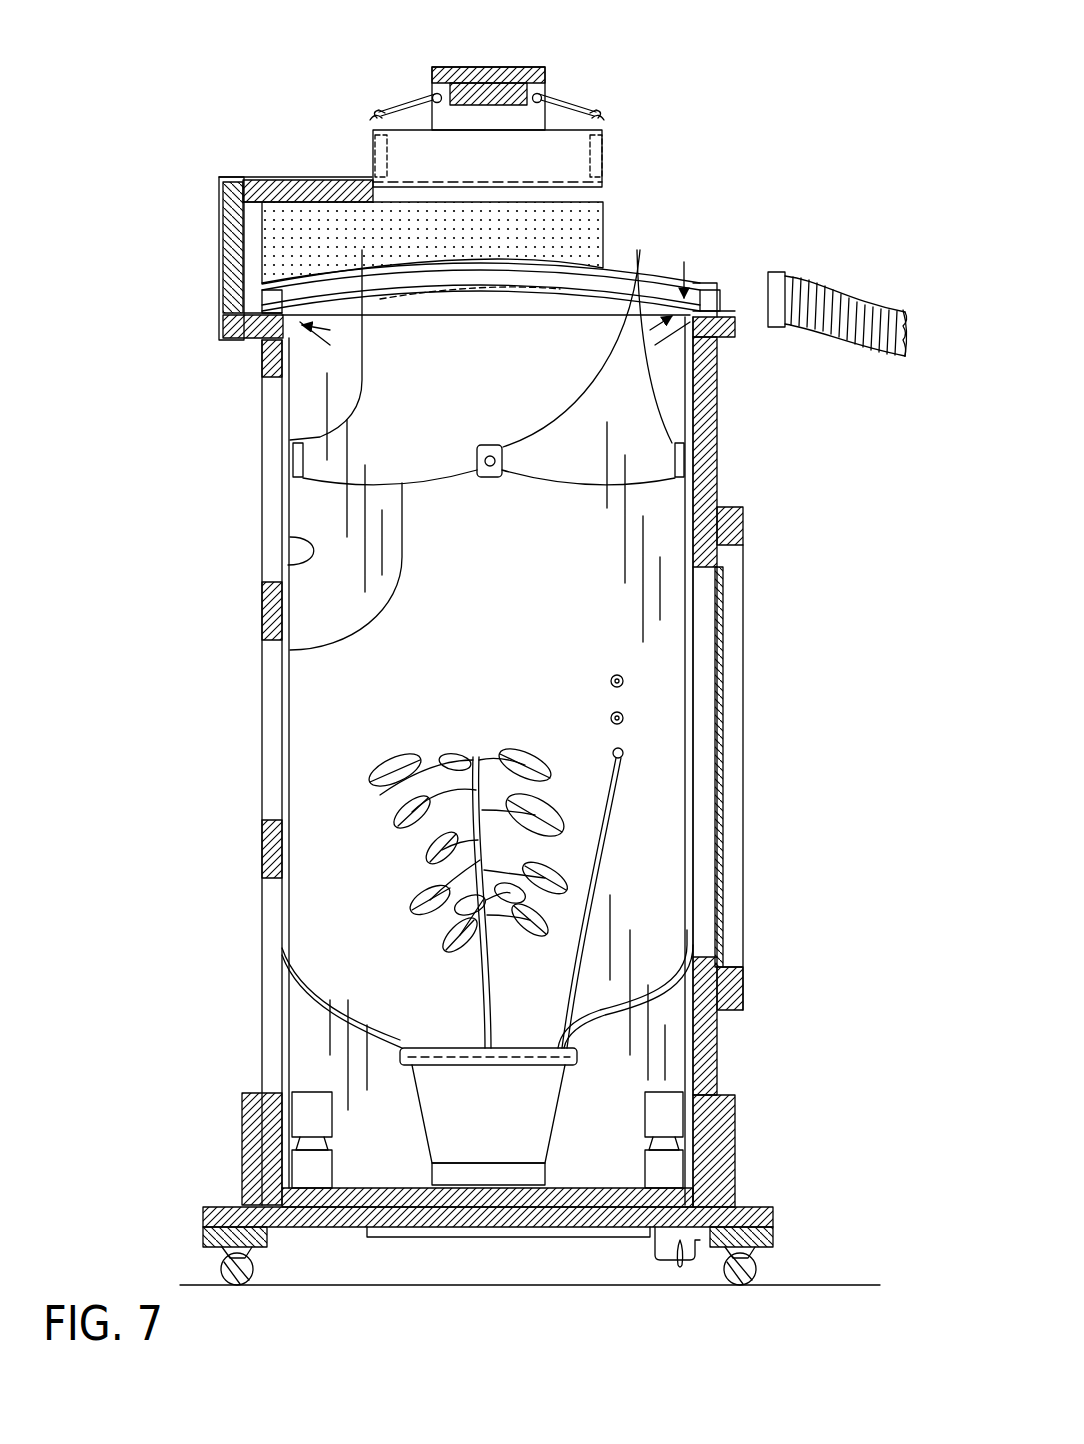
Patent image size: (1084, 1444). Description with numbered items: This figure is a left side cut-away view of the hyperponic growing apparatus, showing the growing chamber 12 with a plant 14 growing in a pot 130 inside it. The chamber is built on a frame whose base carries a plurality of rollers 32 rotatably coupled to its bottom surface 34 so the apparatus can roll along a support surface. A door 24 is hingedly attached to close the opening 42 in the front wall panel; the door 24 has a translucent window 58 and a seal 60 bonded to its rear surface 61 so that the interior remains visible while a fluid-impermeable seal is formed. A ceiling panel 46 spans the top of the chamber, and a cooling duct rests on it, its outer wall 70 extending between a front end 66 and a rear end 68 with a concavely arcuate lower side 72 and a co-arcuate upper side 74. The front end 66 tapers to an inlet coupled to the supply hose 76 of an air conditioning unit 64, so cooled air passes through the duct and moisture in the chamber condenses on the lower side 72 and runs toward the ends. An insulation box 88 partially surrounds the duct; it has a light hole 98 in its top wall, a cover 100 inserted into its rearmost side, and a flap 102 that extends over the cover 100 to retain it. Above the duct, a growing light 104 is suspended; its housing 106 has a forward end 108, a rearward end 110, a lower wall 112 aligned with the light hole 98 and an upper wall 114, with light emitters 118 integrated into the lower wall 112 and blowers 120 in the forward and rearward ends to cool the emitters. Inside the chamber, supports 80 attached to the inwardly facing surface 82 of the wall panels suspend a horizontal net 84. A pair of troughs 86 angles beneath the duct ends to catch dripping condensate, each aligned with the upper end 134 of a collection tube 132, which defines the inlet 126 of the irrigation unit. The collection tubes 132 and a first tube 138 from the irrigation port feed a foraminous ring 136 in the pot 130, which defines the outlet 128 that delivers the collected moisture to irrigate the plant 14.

The growing chamber 12 is at (150, 480).
The plant 14 is at (378, 795).
The door 24 is at (743, 525).
The rollers 32 is at (222, 1265).
The bottom surface 34 is at (307, 1228).
The opening 42 is at (720, 590).
The ceiling panel 46 is at (725, 318).
The window 58 is at (743, 760).
The seal 60 is at (723, 690).
The rear surface 61 is at (713, 470).
The air conditioning unit 64 is at (850, 295).
The front end 66 is at (700, 315).
The rear end 68 is at (244, 300).
The outer wall 70 is at (283, 193).
The lower side 72 is at (365, 434).
The upper side 74 is at (345, 250).
The supply hose 76 is at (880, 350).
The supports 80 is at (295, 490).
The inwardly facing surface 82 is at (290, 537).
The net 84 is at (282, 650).
The troughs 86 is at (292, 392).
The insulation box 88 is at (257, 178).
The light hole 98 is at (416, 175).
The cover 100 is at (222, 200).
The flap 102 is at (228, 330).
The growing light 104 is at (593, 112).
The housing 106 is at (525, 143).
The forward end 108 is at (604, 142).
The rearward end 110 is at (373, 152).
The lower wall 112 is at (575, 200).
The upper wall 114 is at (463, 130).
The light emitters 118 is at (555, 130).
The blowers 120 is at (388, 117).
The inlet 126 is at (684, 262).
The outlet 128 is at (530, 1030).
The pot 130 is at (557, 1100).
The collection tubes 132 is at (288, 737).
The upper end 134 is at (295, 340).
The foraminous ring 136 is at (282, 943).
The first tube 138 is at (624, 755).